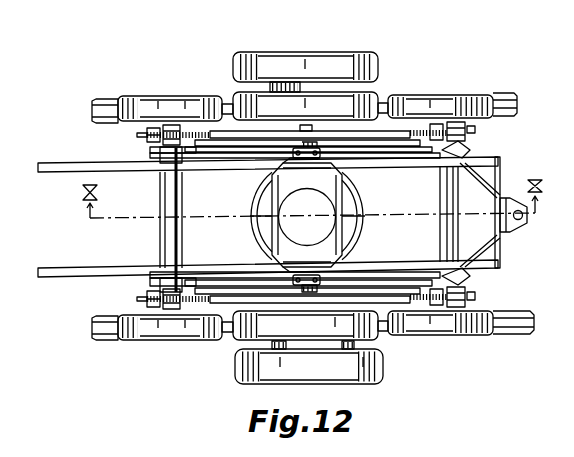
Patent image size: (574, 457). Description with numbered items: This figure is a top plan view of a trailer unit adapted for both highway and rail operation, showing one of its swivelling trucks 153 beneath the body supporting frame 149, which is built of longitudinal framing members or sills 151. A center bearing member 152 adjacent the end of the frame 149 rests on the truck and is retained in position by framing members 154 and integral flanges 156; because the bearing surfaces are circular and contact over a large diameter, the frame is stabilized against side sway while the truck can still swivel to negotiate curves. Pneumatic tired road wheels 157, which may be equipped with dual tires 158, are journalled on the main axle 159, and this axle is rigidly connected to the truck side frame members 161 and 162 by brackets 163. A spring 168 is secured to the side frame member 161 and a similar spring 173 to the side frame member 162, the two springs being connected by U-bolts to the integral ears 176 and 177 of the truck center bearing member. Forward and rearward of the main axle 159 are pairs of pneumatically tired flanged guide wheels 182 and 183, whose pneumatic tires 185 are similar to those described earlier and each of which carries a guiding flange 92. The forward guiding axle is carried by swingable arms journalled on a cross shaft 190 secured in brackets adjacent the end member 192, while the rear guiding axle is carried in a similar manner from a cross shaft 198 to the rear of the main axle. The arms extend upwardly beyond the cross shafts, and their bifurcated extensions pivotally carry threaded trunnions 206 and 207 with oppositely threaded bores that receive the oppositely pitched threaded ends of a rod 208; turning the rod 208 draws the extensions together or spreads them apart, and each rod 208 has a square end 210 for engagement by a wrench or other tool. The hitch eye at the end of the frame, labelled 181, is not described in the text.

The guiding flange 92 is at (480, 120).
The body supporting frame 149 is at (97, 273).
The longitudinal framing member 151 is at (457, 163).
The center bearing member 152 is at (353, 203).
The swivelling truck 153 is at (160, 282).
The framing member 154 is at (343, 182).
The integral flange 156 is at (350, 227).
The pneumatic tired road wheel 157 is at (460, 267).
The dual tires 158 is at (233, 372).
The main axle 159 is at (303, 123).
The truck side frame member 161 is at (423, 133).
The truck side frame member 162 is at (427, 283).
The bracket 163 is at (320, 157).
The spring 168 is at (368, 155).
The spring 173 is at (377, 280).
The integral ear 176 is at (310, 277).
The integral ear 177 is at (283, 165).
The hitch 181 is at (483, 249).
The pneumatically tired flanged guide wheel 182 is at (150, 340).
The pneumatically tired flanged guide wheel 183 is at (137, 108).
The pneumatic tire 185 is at (477, 100).
The cross shaft 190 is at (443, 199).
The end member 192 is at (455, 220).
The cross shaft 198 is at (178, 238).
The threaded trunnion 206 is at (457, 113).
The threaded trunnion 207 is at (150, 140).
The threaded rod 208 is at (190, 128).
The square end 210 is at (467, 145).